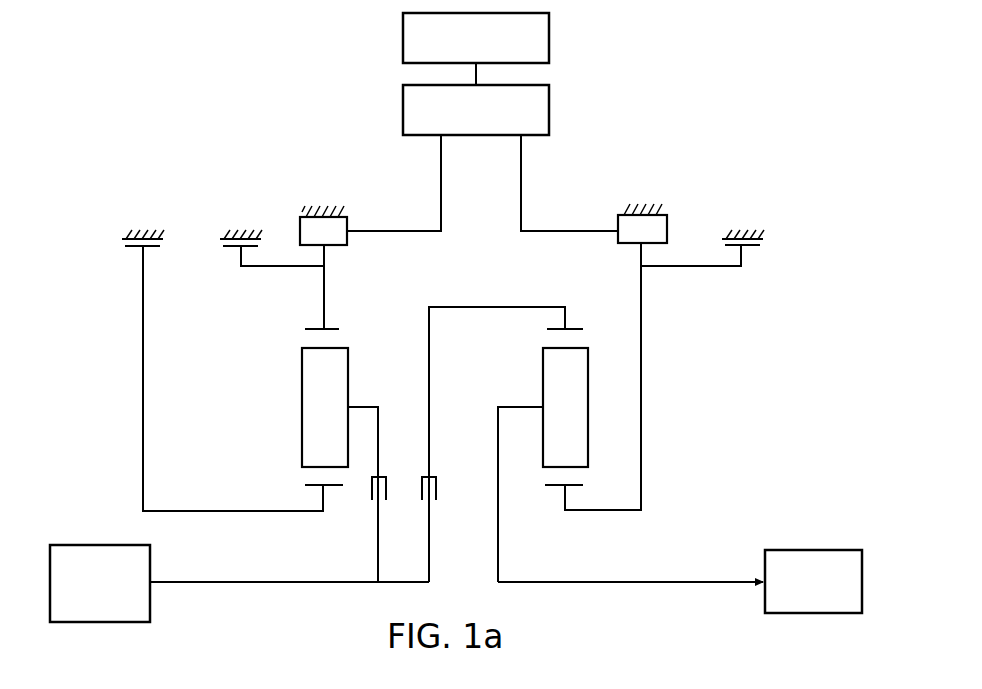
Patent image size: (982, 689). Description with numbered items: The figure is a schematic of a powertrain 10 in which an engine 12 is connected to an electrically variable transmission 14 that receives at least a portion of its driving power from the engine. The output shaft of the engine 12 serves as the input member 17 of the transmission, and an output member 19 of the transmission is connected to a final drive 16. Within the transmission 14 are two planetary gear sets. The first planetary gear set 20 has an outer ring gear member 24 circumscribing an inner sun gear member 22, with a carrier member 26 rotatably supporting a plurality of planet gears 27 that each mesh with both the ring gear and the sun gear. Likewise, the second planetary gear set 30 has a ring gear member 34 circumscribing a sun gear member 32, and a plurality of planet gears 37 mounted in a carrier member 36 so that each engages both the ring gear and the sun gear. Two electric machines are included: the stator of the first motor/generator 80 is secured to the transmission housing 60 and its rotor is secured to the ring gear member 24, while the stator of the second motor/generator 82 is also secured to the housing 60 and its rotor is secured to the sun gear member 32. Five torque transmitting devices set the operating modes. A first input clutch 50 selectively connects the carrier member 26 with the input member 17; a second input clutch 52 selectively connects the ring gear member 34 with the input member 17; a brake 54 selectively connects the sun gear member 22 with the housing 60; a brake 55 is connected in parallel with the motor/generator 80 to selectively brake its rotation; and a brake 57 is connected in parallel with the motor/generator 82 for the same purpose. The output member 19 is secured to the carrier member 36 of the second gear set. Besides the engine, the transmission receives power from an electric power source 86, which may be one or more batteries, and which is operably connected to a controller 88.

The powertrain 10 is at (700, 116).
The engine 12 is at (118, 528).
The electrically variable transmission 14 is at (743, 144).
The final drive 16 is at (800, 530).
The input member 17 is at (186, 584).
The output member 19 is at (726, 584).
The first planetary gear set 20 is at (313, 492).
The sun gear member 22 is at (335, 487).
The ring gear member 24 is at (340, 328).
The carrier member 26 is at (360, 402).
The planet gears 27 is at (325, 407).
The second planetary gear set 30 is at (556, 492).
The sun gear member 32 is at (575, 487).
The ring gear member 34 is at (557, 306).
The carrier member 36 is at (530, 402).
The planet gears 37 is at (565, 407).
The input clutch 50 is at (390, 468).
The input clutch 52 is at (440, 468).
The brake 54 is at (115, 232).
The brake 55 is at (213, 232).
The brake 57 is at (770, 232).
The transmission housing 60 is at (310, 210).
The first motor/generator 80 is at (294, 209).
The second motor/generator 82 is at (676, 207).
The electric power source 86 is at (403, 42).
The controller 88 is at (403, 112).